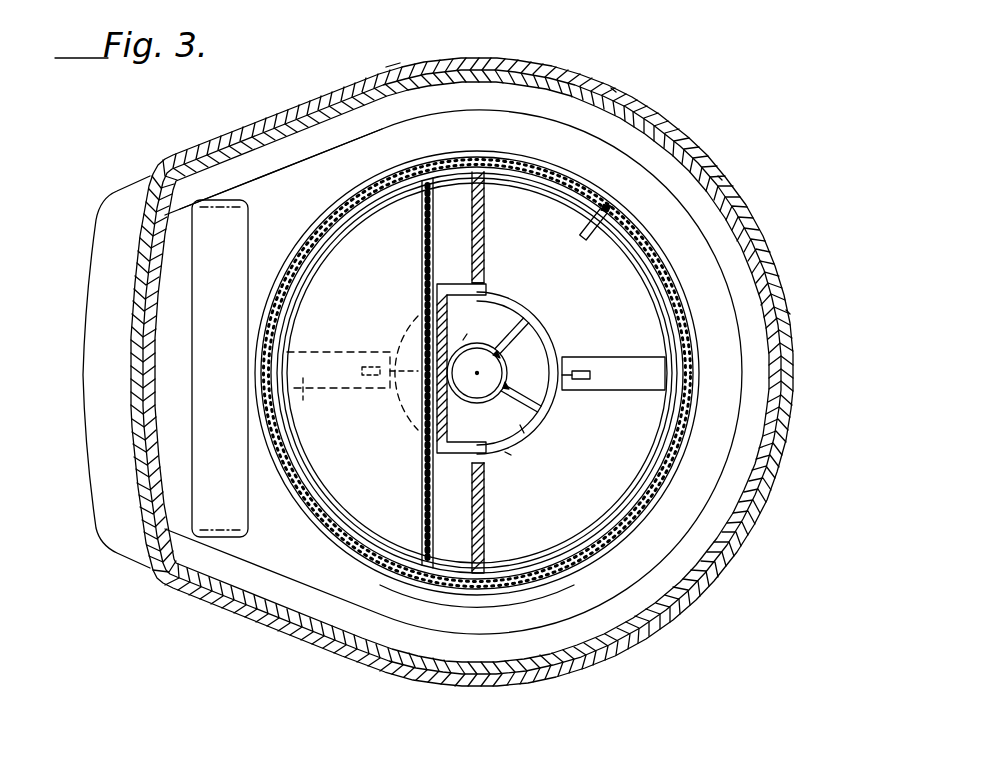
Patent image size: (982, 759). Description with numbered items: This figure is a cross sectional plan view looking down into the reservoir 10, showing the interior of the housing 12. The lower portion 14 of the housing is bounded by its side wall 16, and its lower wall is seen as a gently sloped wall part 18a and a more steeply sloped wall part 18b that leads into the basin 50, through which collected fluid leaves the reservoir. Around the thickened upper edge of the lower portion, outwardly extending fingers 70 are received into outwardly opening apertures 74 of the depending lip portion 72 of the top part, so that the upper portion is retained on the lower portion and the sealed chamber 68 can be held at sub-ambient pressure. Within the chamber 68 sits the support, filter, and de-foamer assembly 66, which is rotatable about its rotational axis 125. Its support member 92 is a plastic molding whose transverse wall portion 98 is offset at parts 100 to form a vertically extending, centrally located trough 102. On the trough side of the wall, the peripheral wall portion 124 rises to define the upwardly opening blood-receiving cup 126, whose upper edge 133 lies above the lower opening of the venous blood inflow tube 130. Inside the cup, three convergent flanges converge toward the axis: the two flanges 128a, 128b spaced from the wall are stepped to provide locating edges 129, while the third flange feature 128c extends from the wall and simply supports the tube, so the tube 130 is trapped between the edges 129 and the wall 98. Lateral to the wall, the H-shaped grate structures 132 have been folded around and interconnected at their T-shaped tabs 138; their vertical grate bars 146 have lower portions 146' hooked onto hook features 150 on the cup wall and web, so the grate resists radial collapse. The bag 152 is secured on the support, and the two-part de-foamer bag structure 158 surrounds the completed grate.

The reservoir 10 is at (351, 61).
The housing 12 is at (796, 391).
The lower portion 14 is at (570, 64).
The side wall 16 is at (693, 137).
The gently sloped wall part 18a is at (296, 234).
The steeply sloped wall part 18b is at (240, 304).
The basin 50 is at (180, 363).
The support, filter, and de-foamer assembly 66 is at (690, 291).
The chamber 68 is at (486, 627).
The fingers 70 is at (333, 89).
The depending lip portion 72 is at (393, 67).
The apertures 74 is at (613, 90).
The support member 92 is at (607, 210).
The transverse wall portion 98 is at (484, 267).
The offset parts 100 is at (472, 281).
The trough 102 is at (436, 438).
The peripheral wall portion 124 is at (511, 298).
The rotational axis 125 is at (473, 383).
The blood-receiving cup 126 is at (503, 427).
The flange 128a is at (524, 323).
The flange 128b is at (539, 412).
The third flange feature 128c is at (508, 324).
The locating edge 129 is at (500, 359).
The venous blood inflow tube 130 is at (507, 377).
The grate structures 132 is at (668, 280).
The upper edge 133 is at (509, 454).
The T-shaped tabs 138 is at (585, 230).
The grate bar 146 is at (338, 388).
The lower portion of grate bar 146' is at (613, 392).
The hook feature 150 is at (387, 347).
The bag 152 is at (302, 293).
The de-foamer bag structure 158 is at (457, 157).